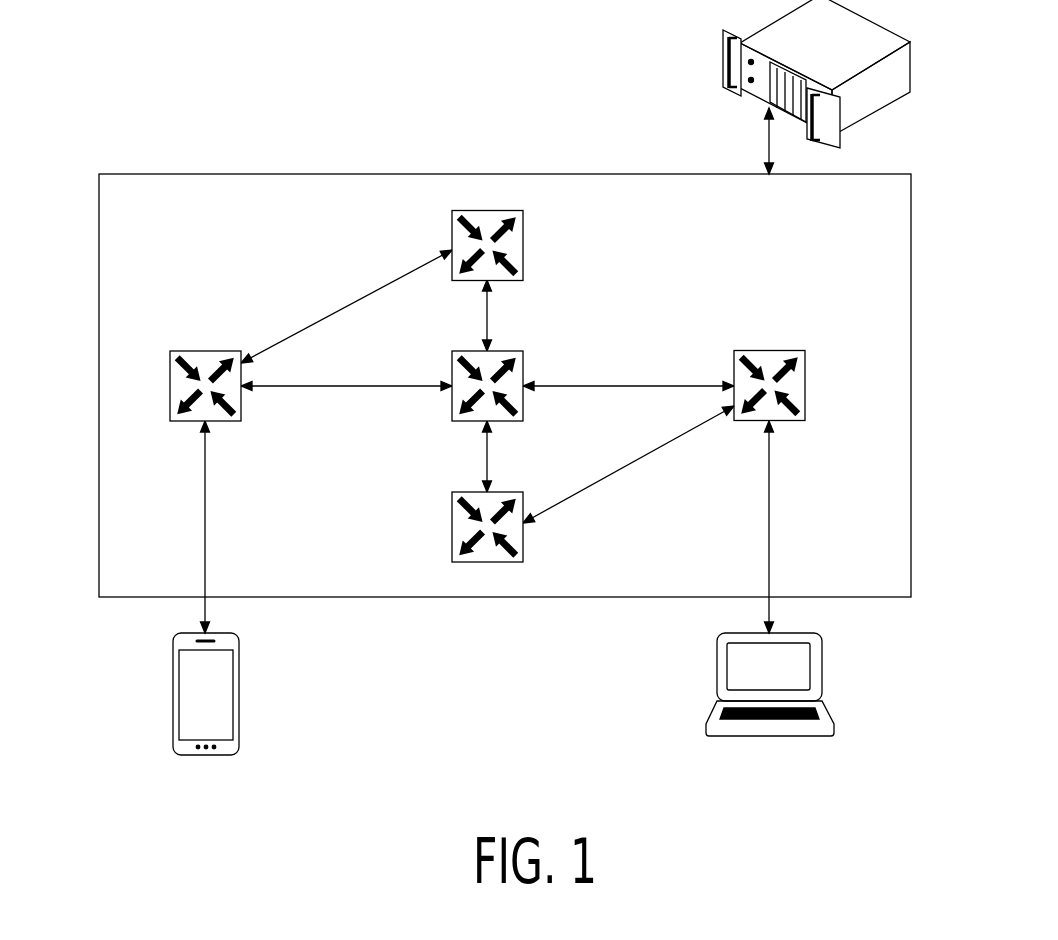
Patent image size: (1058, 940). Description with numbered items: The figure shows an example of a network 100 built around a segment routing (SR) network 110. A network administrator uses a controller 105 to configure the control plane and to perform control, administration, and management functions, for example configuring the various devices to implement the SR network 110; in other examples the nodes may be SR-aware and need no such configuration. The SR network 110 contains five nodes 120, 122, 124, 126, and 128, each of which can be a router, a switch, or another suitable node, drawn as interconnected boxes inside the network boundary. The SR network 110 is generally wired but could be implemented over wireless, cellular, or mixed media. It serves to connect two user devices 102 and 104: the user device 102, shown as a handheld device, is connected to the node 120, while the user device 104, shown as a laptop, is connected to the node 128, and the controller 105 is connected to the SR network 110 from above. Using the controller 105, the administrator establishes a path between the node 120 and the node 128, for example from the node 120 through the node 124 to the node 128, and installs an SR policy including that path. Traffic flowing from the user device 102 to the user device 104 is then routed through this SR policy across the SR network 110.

The network 100 is at (259, 68).
The SR network 110 is at (99, 195).
The controller 105 is at (910, 92).
The node 120 is at (241, 414).
The node 122 is at (523, 274).
The node 124 is at (523, 414).
The node 126 is at (523, 556).
The node 128 is at (805, 414).
The user device 102 is at (204, 757).
The user device 104 is at (770, 737).